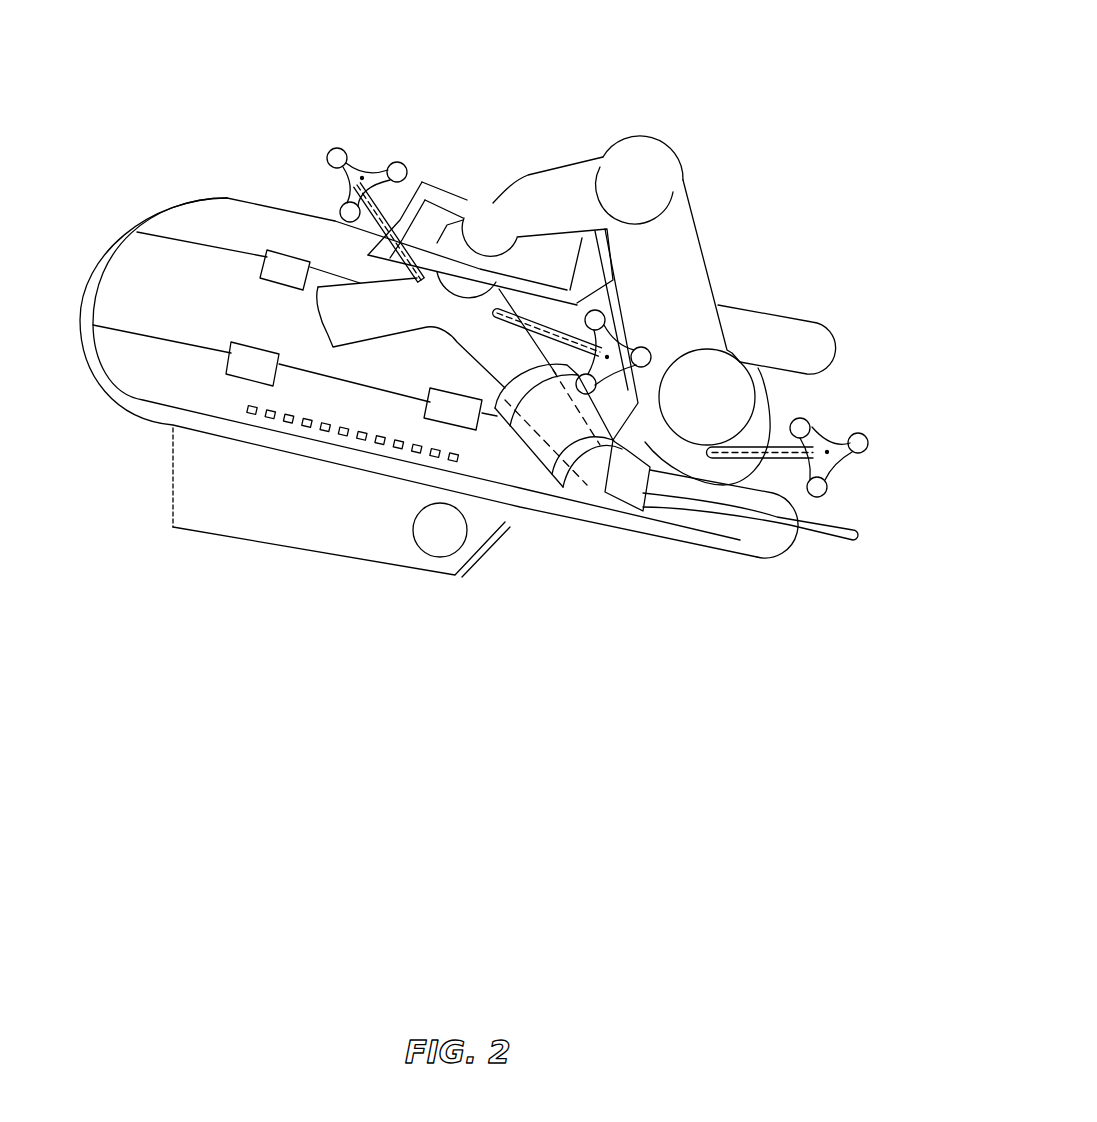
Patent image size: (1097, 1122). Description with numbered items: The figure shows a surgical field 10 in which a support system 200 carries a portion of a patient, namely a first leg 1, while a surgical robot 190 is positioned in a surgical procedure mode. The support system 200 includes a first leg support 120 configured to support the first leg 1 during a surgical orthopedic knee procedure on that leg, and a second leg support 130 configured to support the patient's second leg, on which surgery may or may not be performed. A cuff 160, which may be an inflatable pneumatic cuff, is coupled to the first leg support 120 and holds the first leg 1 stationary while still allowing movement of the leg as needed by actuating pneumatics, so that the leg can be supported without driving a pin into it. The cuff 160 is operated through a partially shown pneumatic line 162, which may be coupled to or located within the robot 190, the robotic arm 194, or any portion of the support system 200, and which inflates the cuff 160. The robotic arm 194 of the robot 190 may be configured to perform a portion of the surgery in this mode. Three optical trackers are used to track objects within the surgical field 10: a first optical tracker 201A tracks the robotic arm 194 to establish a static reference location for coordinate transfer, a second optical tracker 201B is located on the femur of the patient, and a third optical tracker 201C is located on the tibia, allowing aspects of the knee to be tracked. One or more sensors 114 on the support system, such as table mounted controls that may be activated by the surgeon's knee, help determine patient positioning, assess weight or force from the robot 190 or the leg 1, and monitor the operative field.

The surgical field 10 is at (553, 25).
The leg 1 is at (332, 283).
The sensors 114 is at (340, 428).
The first leg support 120 is at (728, 527).
The second leg support 130 is at (772, 337).
The cuff 160 is at (623, 485).
The pneumatic line 162 is at (805, 537).
The surgical robot 190 is at (687, 102).
The robotic arm 194 is at (697, 262).
The support system 200 is at (290, 110).
The first optical tracker 201A is at (803, 430).
The second optical tracker 201B is at (398, 172).
The third optical tracker 201C is at (618, 333).